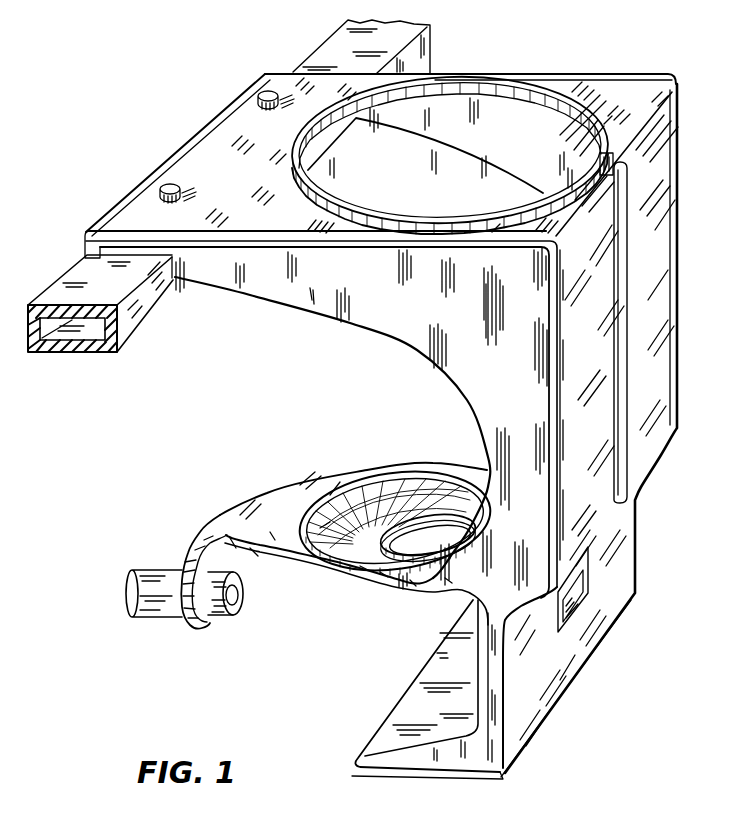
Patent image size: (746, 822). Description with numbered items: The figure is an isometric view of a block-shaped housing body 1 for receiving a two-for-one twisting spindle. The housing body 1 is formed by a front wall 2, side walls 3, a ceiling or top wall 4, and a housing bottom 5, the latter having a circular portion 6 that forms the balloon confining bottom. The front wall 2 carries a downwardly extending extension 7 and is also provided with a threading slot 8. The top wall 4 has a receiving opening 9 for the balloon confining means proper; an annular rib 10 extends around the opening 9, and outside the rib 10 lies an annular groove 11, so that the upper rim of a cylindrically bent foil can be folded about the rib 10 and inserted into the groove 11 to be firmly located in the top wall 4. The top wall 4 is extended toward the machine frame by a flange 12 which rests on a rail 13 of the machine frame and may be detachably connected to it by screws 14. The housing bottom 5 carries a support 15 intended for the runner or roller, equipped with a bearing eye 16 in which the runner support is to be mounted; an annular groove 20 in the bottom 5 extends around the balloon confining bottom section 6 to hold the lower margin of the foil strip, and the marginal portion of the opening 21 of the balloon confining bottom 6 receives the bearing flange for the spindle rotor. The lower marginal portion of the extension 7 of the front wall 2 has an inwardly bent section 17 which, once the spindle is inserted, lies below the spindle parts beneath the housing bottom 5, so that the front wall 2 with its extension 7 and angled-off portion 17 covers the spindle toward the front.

The housing body 1 is at (568, 57).
The front wall 2 is at (663, 368).
The side walls 3 is at (458, 128).
The top wall 4 is at (605, 95).
The housing bottom 5 is at (350, 568).
The circular portion 6 is at (377, 487).
The extension 7 is at (615, 578).
The threading slot 8 is at (620, 300).
The receiving opening 9 is at (400, 157).
The annular rib 10 is at (493, 77).
The annular groove 11 is at (312, 200).
The flange 12 is at (203, 150).
The rail 13 is at (87, 333).
The screws 14 is at (262, 92).
The support 15 is at (210, 523).
The bearing eye 16 is at (160, 597).
The inwardly bent section 17 is at (407, 708).
The annular groove 20 is at (345, 483).
The opening 21 is at (430, 533).